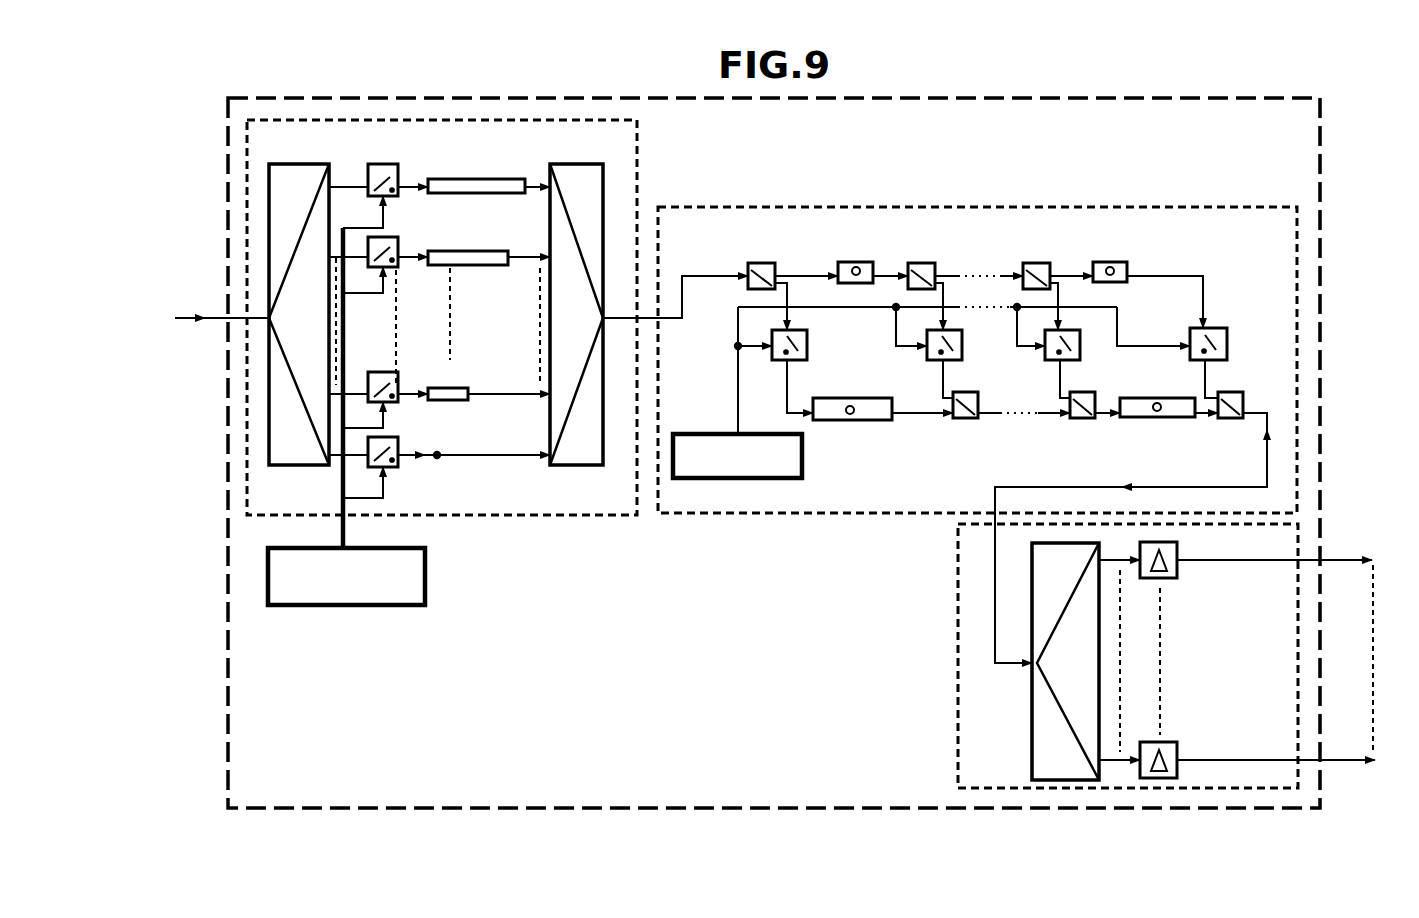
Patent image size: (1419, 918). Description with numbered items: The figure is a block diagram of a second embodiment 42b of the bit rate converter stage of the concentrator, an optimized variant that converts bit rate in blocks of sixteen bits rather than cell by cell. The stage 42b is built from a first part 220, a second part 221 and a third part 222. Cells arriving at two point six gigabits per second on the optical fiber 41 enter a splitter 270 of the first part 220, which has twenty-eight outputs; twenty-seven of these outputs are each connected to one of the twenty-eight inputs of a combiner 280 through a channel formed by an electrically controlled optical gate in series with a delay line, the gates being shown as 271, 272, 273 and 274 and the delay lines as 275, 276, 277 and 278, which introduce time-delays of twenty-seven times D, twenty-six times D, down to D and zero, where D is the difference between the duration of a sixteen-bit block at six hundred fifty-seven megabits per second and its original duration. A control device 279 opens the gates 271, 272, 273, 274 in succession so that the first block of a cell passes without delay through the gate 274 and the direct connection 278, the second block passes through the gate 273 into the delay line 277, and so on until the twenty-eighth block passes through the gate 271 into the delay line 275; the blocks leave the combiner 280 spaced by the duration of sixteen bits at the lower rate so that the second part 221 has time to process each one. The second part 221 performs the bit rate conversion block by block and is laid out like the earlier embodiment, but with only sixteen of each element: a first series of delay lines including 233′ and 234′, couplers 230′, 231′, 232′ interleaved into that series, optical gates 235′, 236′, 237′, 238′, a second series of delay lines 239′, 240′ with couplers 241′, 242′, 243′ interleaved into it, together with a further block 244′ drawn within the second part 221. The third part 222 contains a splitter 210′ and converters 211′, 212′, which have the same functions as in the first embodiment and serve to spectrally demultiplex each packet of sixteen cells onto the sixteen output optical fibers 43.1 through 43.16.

The bit rate converter stage 42b is at (390, 97).
The optical fiber 41 is at (188, 318).
The first part 220 is at (560, 515).
The second part 221 is at (1080, 207).
The third part 222 is at (950, 578).
The splitter 270 is at (312, 168).
The optical gate 271 is at (384, 163).
The optical gate 272 is at (390, 236).
The optical gate 273 is at (381, 371).
The optical gate 274 is at (391, 470).
The delay line 275 is at (514, 178).
The delay line 276 is at (492, 266).
The delay line 277 is at (468, 400).
The delay line 278 is at (441, 460).
The control device 279 is at (415, 578).
The combiner 280 is at (580, 174).
The coupler 230′ is at (762, 262).
The coupler 231′ is at (920, 262).
The coupler 232′ is at (1030, 262).
The delay line 233′ is at (862, 262).
The delay line 234′ is at (1105, 262).
The optical gate 235′ is at (806, 354).
The optical gate 236′ is at (962, 348).
The optical gate 237′ is at (1080, 348).
The optical gate 238′ is at (1227, 350).
The delay line 239′ is at (870, 421).
The delay line 240′ is at (1152, 419).
The coupler 241′ is at (965, 419).
The coupler 242′ is at (1083, 419).
The coupler 243′ is at (1226, 419).
The control block 244′ is at (802, 462).
The splitter 210′ is at (1040, 696).
The converter 211′ is at (1160, 578).
The converter 212′ is at (1160, 742).
The output optical fiber 43.1 is at (1338, 557).
The output optical fiber 43.16 is at (1366, 727).